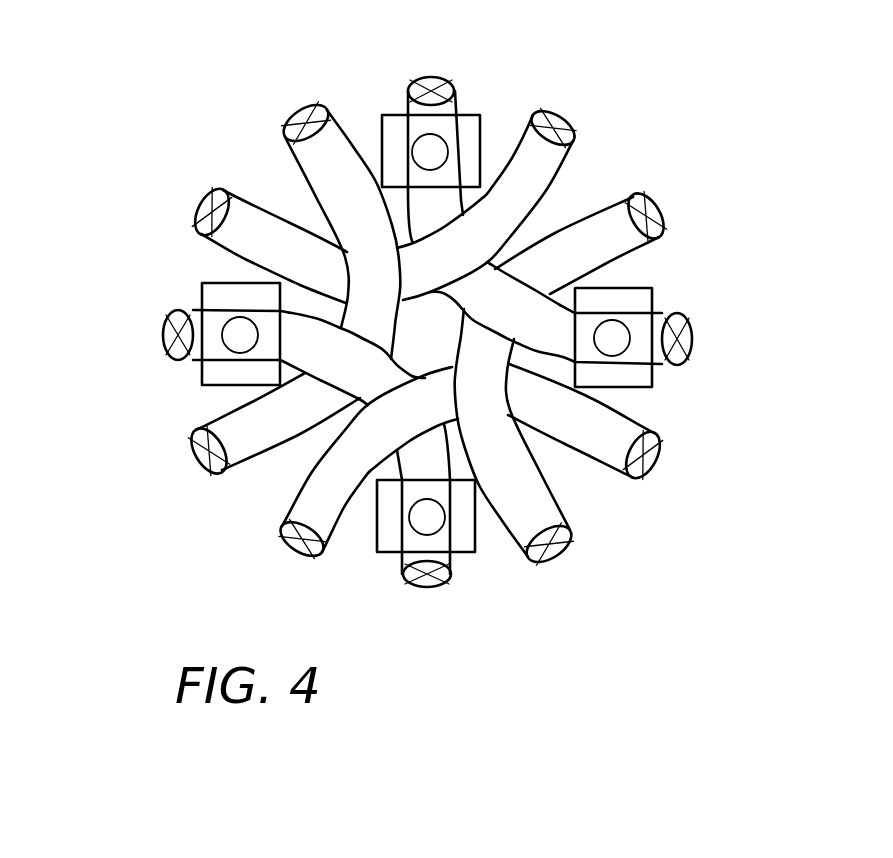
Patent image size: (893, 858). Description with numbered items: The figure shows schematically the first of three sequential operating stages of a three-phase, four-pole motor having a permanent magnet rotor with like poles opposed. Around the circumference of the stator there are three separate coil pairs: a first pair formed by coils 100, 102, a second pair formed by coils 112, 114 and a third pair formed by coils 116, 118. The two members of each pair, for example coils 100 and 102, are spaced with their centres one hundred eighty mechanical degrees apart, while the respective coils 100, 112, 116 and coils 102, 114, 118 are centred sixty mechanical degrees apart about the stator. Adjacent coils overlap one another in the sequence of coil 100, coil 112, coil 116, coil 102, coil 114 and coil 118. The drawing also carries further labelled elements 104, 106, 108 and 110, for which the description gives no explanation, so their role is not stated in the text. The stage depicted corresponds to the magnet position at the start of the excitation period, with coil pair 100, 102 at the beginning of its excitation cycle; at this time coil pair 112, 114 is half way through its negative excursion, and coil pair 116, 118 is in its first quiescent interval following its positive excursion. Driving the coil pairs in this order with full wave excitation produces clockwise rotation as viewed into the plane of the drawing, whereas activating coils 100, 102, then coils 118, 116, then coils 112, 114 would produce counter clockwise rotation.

The coil 100 is at (458, 91).
The coil 102 is at (455, 573).
The first motor M1 104 is at (472, 130).
The second motor M2 106 is at (647, 296).
The third motor M3 108 is at (378, 548).
The fourth motor M4 110 is at (205, 372).
The coil 112 is at (660, 233).
The coil 114 is at (207, 473).
The coil 116 is at (657, 454).
The coil 118 is at (195, 228).